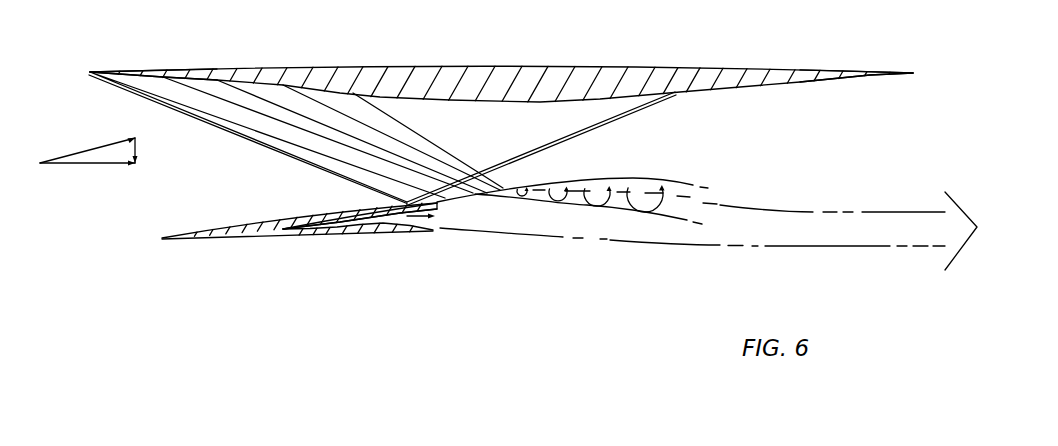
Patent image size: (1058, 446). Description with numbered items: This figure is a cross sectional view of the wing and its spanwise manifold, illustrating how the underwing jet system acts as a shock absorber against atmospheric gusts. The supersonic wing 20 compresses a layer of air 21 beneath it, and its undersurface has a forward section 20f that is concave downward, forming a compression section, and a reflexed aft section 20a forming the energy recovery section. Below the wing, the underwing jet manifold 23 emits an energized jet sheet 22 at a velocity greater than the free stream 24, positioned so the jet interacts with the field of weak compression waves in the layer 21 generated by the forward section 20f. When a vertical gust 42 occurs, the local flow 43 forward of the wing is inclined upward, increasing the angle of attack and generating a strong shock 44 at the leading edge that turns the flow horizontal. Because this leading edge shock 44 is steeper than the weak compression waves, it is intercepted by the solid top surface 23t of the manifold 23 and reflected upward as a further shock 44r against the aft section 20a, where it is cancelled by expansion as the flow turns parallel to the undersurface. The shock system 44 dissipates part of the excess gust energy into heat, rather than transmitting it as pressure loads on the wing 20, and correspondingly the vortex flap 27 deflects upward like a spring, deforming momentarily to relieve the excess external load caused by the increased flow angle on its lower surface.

The supersonic wing 20 is at (533, 65).
The forward section 20f is at (208, 76).
The aft section 20a is at (799, 83).
The layer of air 21 is at (431, 131).
The leading edge shock 44 is at (243, 136).
The reflected shock 44r is at (603, 122).
The local flow 43 is at (104, 124).
The vertical gust 42 is at (136, 152).
The free stream 24 is at (87, 179).
The underwing jet manifold 23 is at (222, 226).
The solid top surface 23t is at (279, 222).
The jet sheet 22 is at (441, 216).
The vortex flap 27 is at (763, 208).